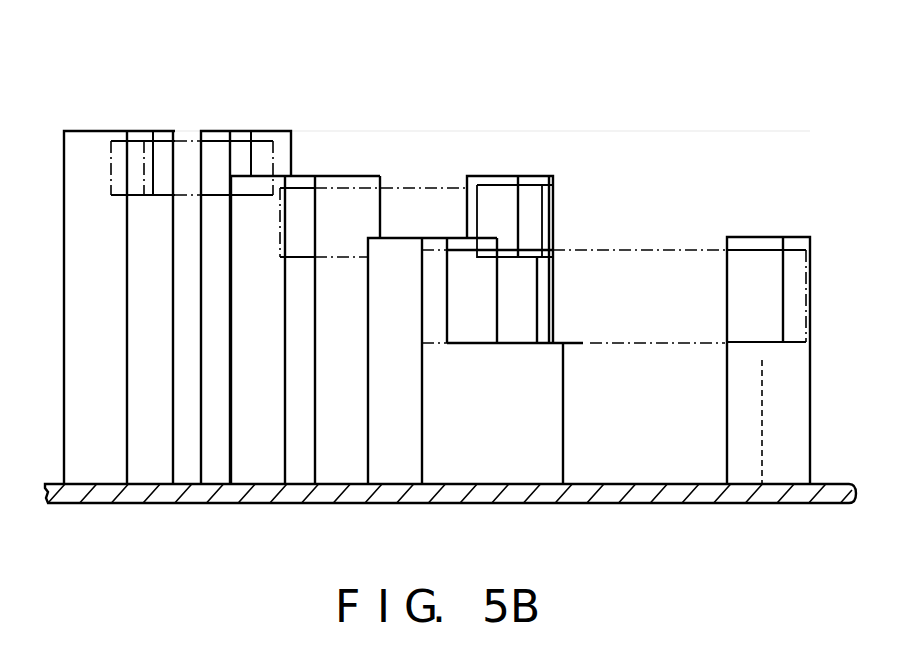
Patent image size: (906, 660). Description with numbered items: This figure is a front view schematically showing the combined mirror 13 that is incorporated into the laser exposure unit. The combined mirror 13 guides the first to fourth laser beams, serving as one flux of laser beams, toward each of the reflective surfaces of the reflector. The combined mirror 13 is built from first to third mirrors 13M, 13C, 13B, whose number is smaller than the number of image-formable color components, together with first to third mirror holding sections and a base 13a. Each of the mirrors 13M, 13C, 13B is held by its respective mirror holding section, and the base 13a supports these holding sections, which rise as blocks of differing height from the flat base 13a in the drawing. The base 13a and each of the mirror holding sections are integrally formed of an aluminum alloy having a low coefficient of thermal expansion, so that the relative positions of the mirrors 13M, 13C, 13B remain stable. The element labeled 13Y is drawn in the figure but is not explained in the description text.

The combined mirror 13 is at (670, 163).
The base 13a is at (675, 493).
The yellow pattern block 13Y is at (90, 143).
The third mirror 13B is at (192, 140).
The second mirror 13C is at (413, 185).
The first mirror 13M is at (673, 248).